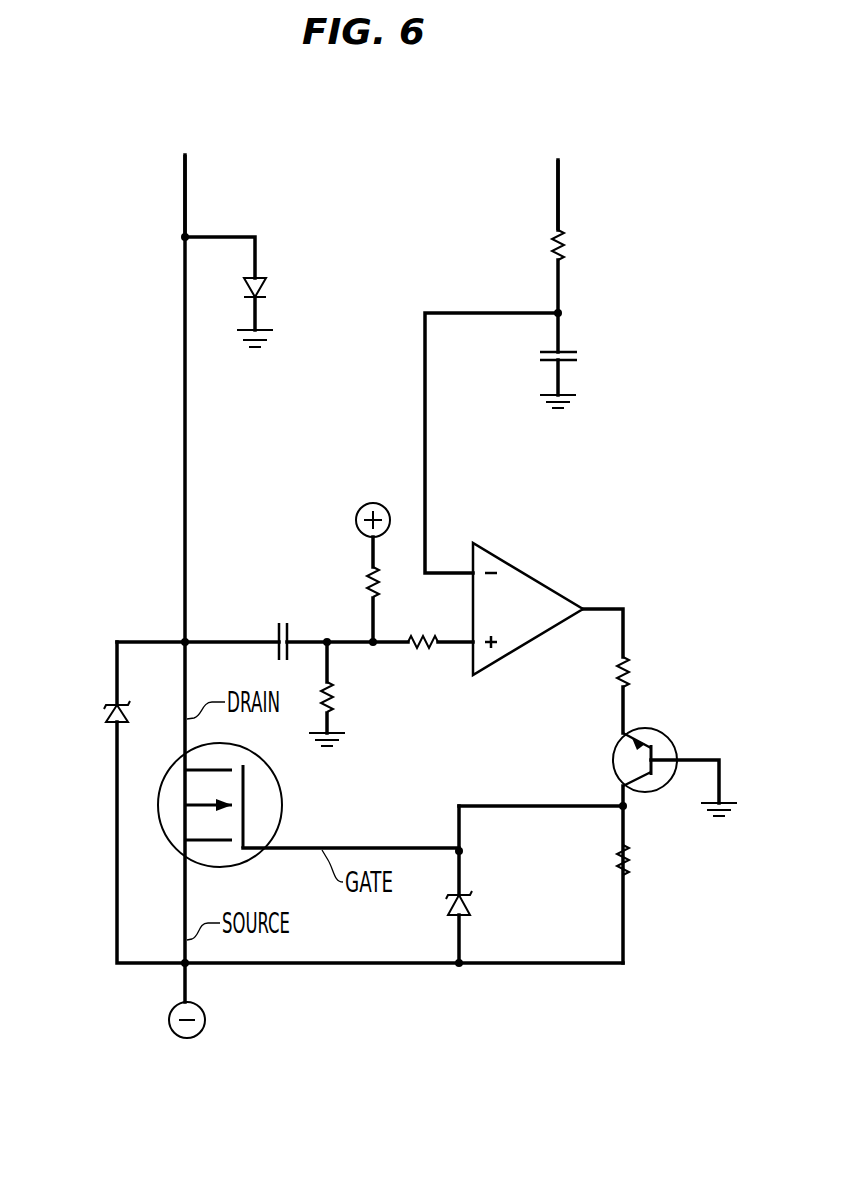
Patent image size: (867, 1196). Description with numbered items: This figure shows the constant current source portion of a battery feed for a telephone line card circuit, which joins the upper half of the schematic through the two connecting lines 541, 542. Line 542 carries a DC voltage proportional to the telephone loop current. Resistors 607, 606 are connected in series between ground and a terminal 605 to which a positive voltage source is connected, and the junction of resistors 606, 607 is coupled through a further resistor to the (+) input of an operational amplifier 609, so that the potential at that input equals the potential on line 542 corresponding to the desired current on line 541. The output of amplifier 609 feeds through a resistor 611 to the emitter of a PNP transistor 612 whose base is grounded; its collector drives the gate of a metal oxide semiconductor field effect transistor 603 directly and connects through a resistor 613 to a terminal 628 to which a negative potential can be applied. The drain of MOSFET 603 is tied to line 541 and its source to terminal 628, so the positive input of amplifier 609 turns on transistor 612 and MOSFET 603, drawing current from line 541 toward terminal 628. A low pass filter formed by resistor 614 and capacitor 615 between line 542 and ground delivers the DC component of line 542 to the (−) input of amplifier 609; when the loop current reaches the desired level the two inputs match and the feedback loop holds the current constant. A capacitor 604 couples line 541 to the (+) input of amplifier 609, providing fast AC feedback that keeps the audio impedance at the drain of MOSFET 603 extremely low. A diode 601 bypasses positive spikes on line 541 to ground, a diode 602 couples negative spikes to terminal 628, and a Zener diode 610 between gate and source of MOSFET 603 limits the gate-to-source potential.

The line 541 is at (185, 205).
The line 542 is at (558, 203).
The diode 601 is at (266, 286).
The diode 602 is at (106, 713).
The metal oxide semiconductor field effect transistor 603 is at (176, 843).
The capacitor 604 is at (278, 633).
The terminal 605 is at (358, 512).
The resistor 606 is at (366, 585).
The resistor 607 is at (338, 696).
The operational amplifier 609 is at (528, 572).
The Zener diode 610 is at (470, 905).
The resistor 611 is at (635, 666).
The PNP transistor 612 is at (614, 760).
The resistor 613 is at (640, 856).
The resistor 614 is at (572, 238).
The capacitor 615 is at (566, 351).
The terminal 628 is at (170, 1020).